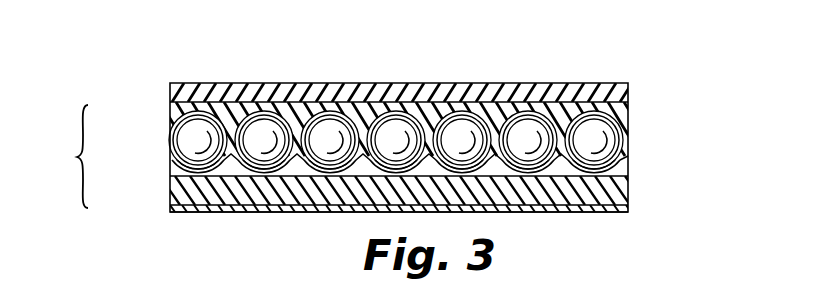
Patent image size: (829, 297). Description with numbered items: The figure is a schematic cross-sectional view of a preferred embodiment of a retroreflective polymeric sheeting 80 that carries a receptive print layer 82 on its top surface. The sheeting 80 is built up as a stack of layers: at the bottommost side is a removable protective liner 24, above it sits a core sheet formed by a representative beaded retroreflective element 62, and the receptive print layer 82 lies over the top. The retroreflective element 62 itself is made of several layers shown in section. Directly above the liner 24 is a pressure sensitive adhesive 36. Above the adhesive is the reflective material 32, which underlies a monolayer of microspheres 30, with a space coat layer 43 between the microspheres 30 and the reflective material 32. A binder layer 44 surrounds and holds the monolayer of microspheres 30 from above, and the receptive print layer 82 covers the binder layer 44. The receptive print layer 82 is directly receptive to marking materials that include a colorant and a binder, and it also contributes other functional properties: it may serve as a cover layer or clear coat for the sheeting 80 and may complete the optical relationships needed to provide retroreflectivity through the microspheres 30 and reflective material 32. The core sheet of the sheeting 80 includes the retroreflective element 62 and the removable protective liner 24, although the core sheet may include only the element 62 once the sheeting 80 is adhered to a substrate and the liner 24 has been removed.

The removable protective liner 24 is at (623, 208).
The microspheres 30 is at (172, 133).
The reflective material 32 is at (172, 186).
The pressure sensitive adhesive 36 is at (172, 207).
The space coat layer 43 is at (172, 161).
The binder layer 44 is at (170, 104).
The beaded retroreflective element 62 is at (66, 156).
The retroreflective polymeric sheeting 80 is at (299, 217).
The receptive print layer 82 is at (628, 92).